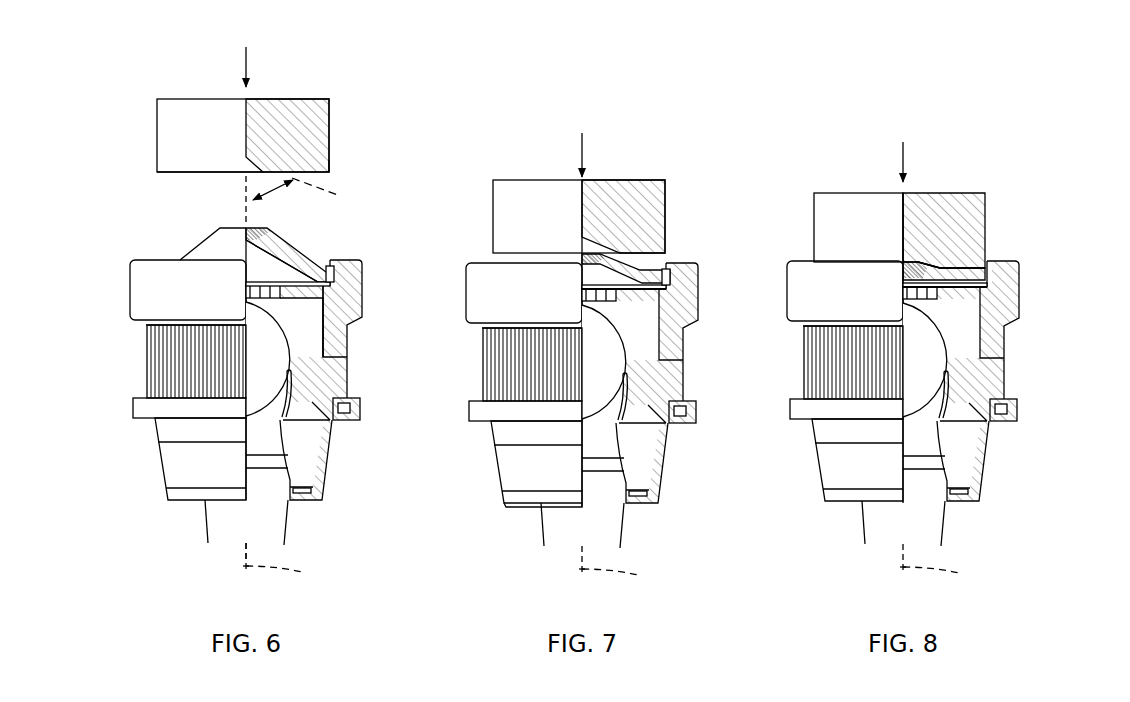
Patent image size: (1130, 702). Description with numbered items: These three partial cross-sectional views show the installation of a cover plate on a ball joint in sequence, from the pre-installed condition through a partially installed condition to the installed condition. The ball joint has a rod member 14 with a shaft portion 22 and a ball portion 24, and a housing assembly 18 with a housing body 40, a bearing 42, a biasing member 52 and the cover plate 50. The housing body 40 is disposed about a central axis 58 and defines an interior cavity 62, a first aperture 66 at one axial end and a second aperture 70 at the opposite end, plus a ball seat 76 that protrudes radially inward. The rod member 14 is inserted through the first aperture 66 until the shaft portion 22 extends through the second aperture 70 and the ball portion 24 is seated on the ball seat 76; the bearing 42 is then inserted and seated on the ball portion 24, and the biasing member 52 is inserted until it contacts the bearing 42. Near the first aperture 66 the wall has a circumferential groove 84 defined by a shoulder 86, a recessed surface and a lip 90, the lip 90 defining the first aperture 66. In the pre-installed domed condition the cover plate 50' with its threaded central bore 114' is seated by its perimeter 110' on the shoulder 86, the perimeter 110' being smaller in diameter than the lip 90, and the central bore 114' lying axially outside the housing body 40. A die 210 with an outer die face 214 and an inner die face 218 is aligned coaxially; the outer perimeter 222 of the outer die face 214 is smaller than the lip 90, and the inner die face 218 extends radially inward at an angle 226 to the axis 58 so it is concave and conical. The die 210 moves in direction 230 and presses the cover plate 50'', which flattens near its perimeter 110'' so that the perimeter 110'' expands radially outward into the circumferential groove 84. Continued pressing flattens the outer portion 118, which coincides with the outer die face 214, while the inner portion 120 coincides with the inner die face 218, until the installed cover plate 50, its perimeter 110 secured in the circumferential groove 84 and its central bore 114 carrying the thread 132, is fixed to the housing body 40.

In FIG. 6, the rod member 14 is at (170, 521).
In FIG. 6, the housing assembly 18 is at (161, 459).
In FIG. 7, the housing assembly 18 is at (496, 464).
In FIG. 8, the housing assembly 18 is at (818, 460).
In FIG. 6, the shaft portion 22 is at (187, 560).
In FIG. 6, the ball portion 24 is at (190, 368).
In FIG. 6, the housing body 40 is at (152, 361).
In FIG. 7, the housing body 40 is at (510, 364).
In FIG. 8, the housing body 40 is at (853, 362).
In FIG. 6, the bearing 42 is at (344, 328).
In FIG. 8, the cover plate 50 is at (990, 288).
In FIG. 6, the cover plate (pre-installed condition) 50' is at (177, 261).
In FIG. 7, the cover plate (partially installed condition) 50'' is at (553, 257).
In FIG. 6, the biasing member 52 is at (153, 292).
In FIG. 6, the central axis 58 is at (287, 566).
In FIG. 7, the central axis 58 is at (624, 569).
In FIG. 8, the central axis 58 is at (945, 566).
In FIG. 6, the interior cavity 62 is at (351, 340).
In FIG. 6, the first aperture 66 is at (279, 243).
In FIG. 6, the second aperture 70 is at (316, 527).
In FIG. 6, the ball seat 76 is at (379, 410).
In FIG. 7, the circumferential groove 84 is at (665, 297).
In FIG. 8, the circumferential groove 84 is at (1006, 275).
In FIG. 6, the shoulder 86 is at (368, 321).
In FIG. 6, the lip 90 is at (374, 262).
In FIG. 8, the perimeter 110 is at (1008, 262).
In FIG. 6, the perimeter (pre-installed condition) 110' is at (342, 292).
In FIG. 7, the perimeter (partially installed condition) 110'' is at (672, 273).
In FIG. 8, the central bore 114 is at (833, 252).
In FIG. 6, the central bore (pre-installed condition) 114' is at (157, 231).
In FIG. 8, the outer portion 118 is at (991, 207).
In FIG. 8, the inner portion 120 is at (946, 198).
In FIG. 8, the thread 132 is at (831, 216).
In FIG. 6, the die 210 is at (198, 134).
In FIG. 7, the die 210 is at (542, 216).
In FIG. 8, the die 210 is at (899, 230).
In FIG. 6, the outer die face 214 is at (351, 175).
In FIG. 6, the inner die face 218 is at (171, 171).
In FIG. 6, the outer perimeter 222 is at (359, 143).
In FIG. 6, the angle 226 is at (213, 205).
In FIG. 6, the direction 230 is at (207, 56).
In FIG. 7, the direction 230 is at (543, 145).
In FIG. 8, the direction 230 is at (864, 154).